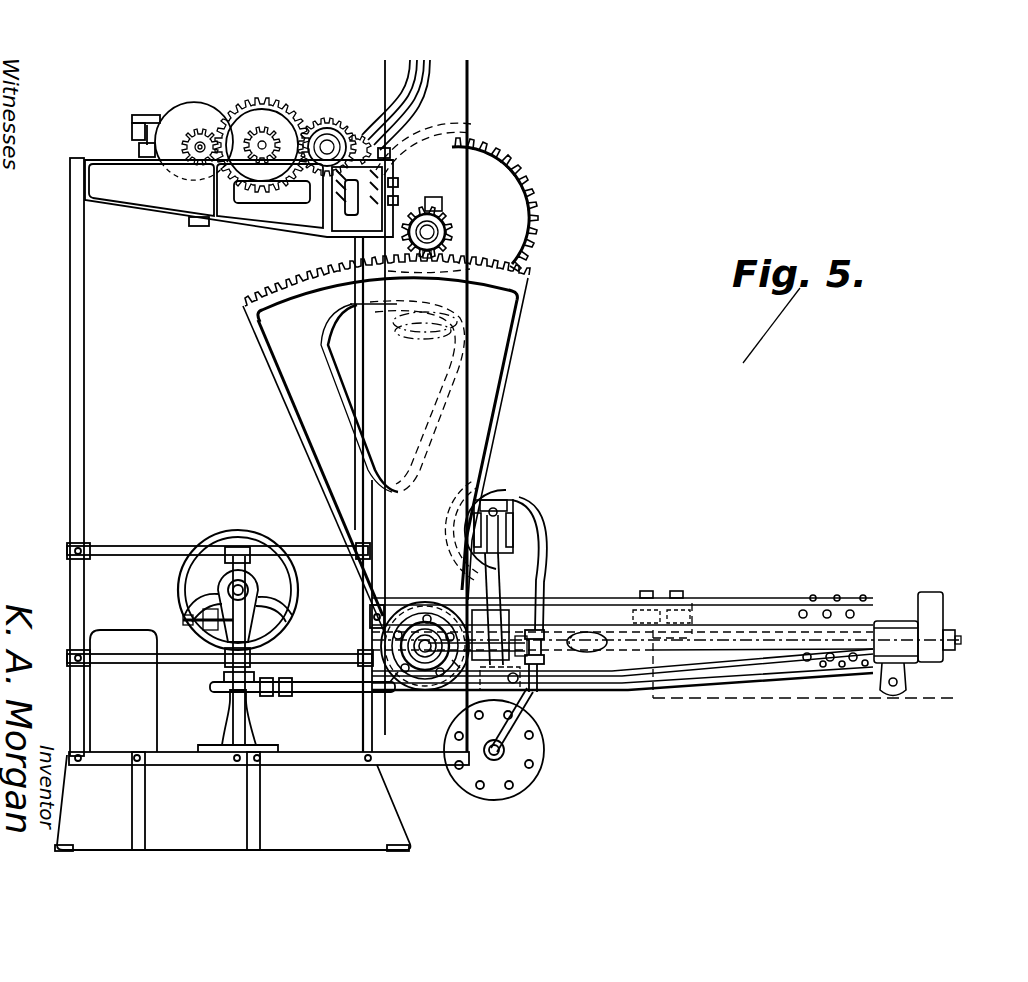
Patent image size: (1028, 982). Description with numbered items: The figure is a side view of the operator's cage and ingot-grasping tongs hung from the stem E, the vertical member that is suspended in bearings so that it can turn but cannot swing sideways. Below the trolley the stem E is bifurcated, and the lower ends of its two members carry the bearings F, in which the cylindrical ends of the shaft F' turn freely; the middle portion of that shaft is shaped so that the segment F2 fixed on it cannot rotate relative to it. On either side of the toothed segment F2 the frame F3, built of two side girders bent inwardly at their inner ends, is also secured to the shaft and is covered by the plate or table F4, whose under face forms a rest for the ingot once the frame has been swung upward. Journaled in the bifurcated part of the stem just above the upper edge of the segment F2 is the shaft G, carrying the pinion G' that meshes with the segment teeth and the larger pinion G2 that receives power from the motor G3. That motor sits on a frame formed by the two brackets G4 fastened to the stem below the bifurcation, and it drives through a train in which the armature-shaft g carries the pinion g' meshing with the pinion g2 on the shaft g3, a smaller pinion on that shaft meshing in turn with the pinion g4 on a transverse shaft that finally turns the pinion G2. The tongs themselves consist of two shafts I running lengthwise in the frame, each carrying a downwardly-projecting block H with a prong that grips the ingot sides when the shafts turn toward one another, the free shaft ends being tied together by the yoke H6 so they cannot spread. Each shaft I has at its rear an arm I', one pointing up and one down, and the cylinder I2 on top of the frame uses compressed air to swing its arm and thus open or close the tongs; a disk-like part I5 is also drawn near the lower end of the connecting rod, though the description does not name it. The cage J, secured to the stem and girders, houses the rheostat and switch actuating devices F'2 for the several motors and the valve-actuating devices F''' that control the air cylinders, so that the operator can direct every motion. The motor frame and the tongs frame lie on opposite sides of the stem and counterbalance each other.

The stem E is at (401, 105).
The shaft G is at (450, 232).
The pinion G' is at (446, 191).
The larger pinion G2 is at (538, 216).
The motor G3 is at (190, 106).
The brackets G4 is at (241, 176).
The armature-shaft g is at (193, 168).
The pinion g' is at (200, 136).
The pinion g2 is at (286, 95).
The shaft g3 is at (262, 150).
The pinion g4 is at (338, 120).
The bearings F is at (425, 625).
The shaft F' is at (477, 615).
The segment F2 is at (504, 374).
The rheostat and switch actuating devices F'2 is at (238, 619).
The valve-actuating devices F''' is at (189, 618).
The frame F3 is at (617, 688).
The plate or table F4 is at (720, 604).
The block H is at (896, 658).
The yoke H6 is at (947, 627).
The shaft I is at (959, 640).
The arm I' is at (527, 594).
The cylinder I2 is at (531, 516).
The disk I5 is at (494, 744).
The cage J is at (172, 758).